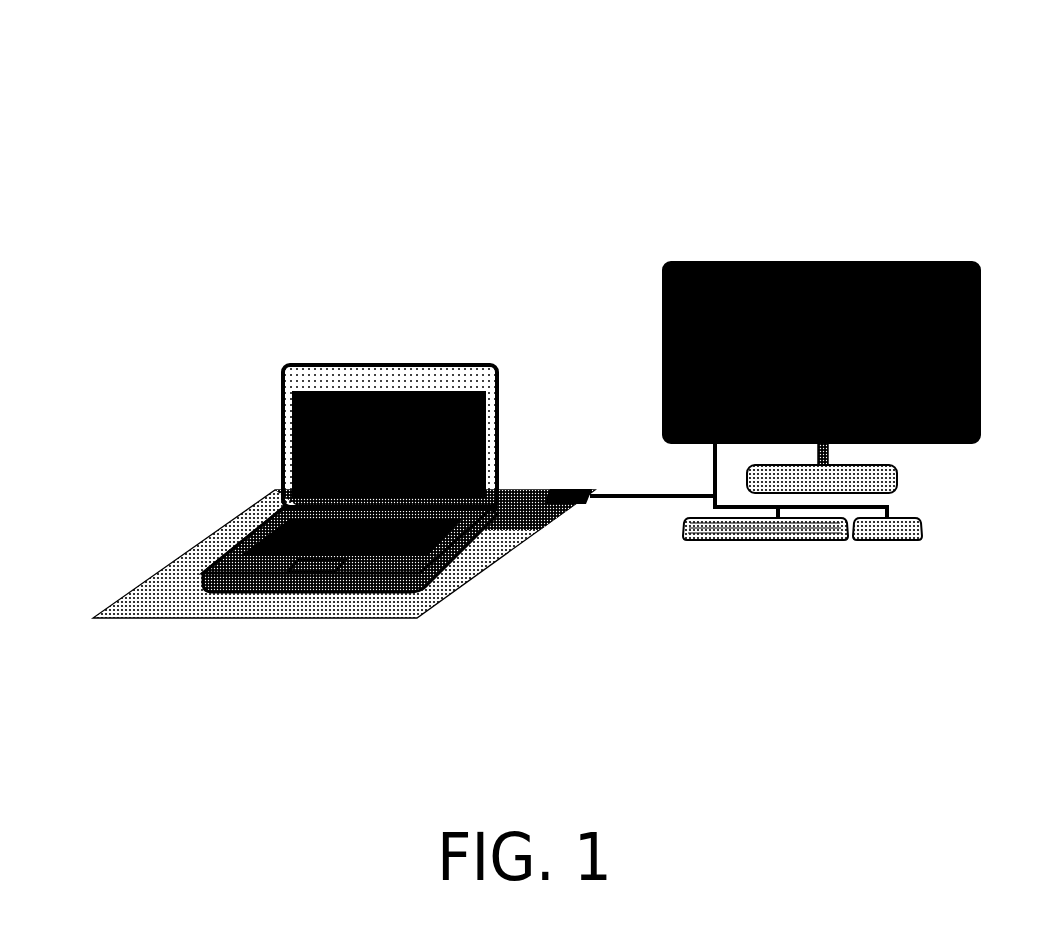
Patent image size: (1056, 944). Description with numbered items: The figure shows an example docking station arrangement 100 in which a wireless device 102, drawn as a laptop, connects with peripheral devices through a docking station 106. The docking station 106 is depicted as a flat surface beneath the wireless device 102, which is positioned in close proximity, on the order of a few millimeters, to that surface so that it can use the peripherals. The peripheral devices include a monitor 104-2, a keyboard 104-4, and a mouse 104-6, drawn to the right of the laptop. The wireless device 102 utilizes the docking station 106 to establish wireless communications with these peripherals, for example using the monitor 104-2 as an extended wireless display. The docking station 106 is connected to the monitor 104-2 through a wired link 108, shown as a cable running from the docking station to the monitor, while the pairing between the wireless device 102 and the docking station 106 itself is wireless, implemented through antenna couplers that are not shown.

The docking station arrangement 100 is at (468, 74).
The wireless device 102 is at (282, 451).
The monitor 104-2 is at (791, 205).
The keyboard 104-4 is at (777, 555).
The mouse 104-6 is at (905, 558).
The docking station 106 is at (478, 587).
The wired link 108 is at (659, 483).